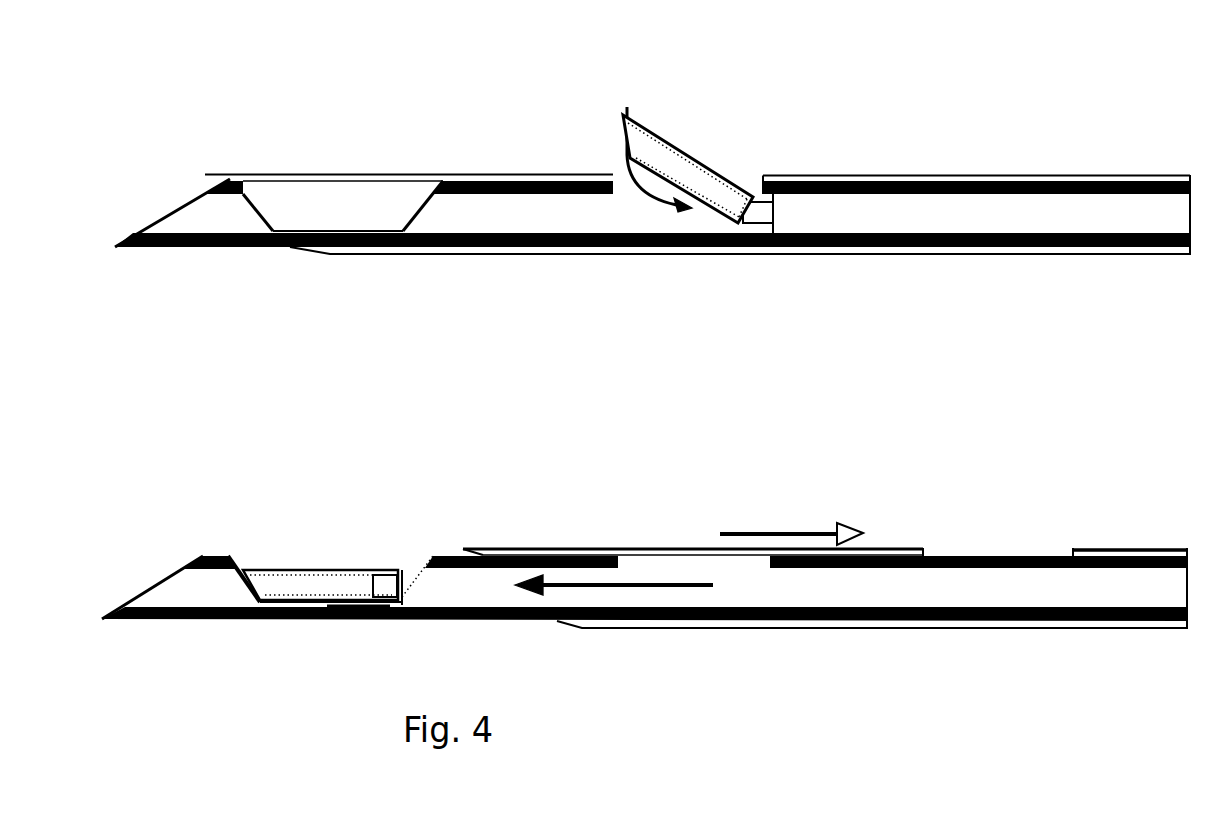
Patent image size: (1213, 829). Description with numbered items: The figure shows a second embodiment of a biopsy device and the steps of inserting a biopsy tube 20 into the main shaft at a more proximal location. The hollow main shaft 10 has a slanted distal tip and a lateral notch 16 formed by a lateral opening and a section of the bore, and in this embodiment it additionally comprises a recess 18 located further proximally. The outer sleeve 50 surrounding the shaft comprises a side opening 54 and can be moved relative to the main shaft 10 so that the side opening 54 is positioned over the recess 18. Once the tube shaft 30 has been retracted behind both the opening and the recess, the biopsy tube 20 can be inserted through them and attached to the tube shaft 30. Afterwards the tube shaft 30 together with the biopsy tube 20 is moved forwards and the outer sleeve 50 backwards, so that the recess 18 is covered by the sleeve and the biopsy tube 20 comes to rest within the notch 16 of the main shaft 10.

The hollow shaft 10 is at (194, 257).
The notch 16 is at (356, 186).
The recess 18 is at (619, 204).
The biopsy tube 20 is at (673, 145).
The tube shaft 30 is at (1040, 204).
The outer sleeve 50 is at (958, 151).
The side opening 54 is at (763, 164).